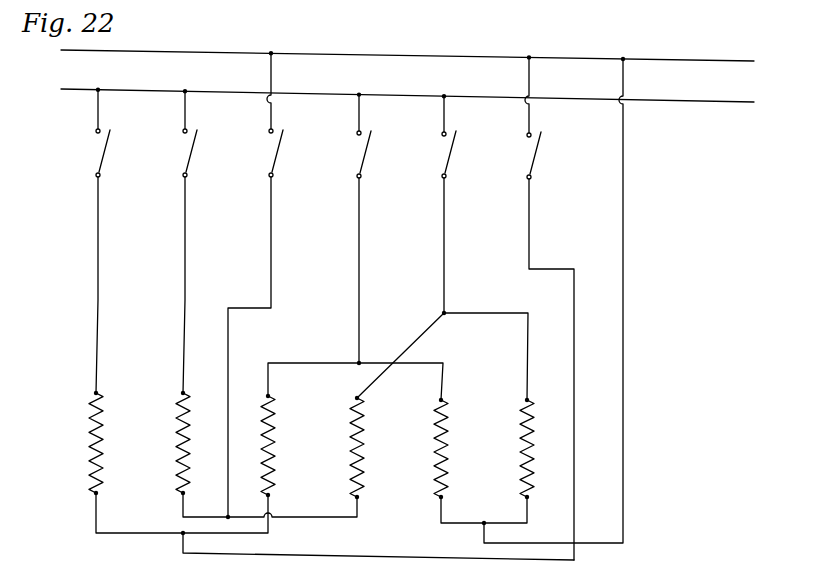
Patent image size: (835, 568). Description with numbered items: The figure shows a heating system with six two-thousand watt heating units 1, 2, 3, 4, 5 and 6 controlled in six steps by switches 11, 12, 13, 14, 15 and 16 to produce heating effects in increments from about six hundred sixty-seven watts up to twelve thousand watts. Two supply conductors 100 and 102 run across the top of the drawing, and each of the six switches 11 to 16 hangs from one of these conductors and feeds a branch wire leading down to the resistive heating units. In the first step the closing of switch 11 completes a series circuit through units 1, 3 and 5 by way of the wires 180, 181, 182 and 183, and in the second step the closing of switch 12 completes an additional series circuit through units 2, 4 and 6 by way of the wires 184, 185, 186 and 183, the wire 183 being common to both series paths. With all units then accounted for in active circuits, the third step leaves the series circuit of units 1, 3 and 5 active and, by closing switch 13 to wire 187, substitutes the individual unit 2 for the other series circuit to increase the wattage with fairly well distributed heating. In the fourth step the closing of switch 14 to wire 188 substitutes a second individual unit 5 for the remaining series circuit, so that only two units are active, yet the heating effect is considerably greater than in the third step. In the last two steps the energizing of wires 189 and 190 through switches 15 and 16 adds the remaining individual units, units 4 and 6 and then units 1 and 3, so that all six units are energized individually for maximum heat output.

The supply line 100 is at (352, 33).
The supply line 102 is at (407, 93).
The switch 11 is at (103, 152).
The switch 12 is at (189, 153).
The switch 13 is at (275, 154).
The switch 14 is at (363, 158).
The switch 15 is at (448, 158).
The switch 16 is at (533, 160).
The wire 180 is at (97, 198).
The wire 184 is at (184, 200).
The wire 187 is at (270, 203).
The wire 188 is at (358, 204).
The wire 189 is at (443, 206).
The wire 190 is at (528, 207).
The wire 183 is at (621, 208).
The wire 182 is at (309, 362).
The wire 186 is at (432, 324).
The wire 181 is at (152, 533).
The wire 185 is at (315, 510).
The heating unit 1 is at (89, 432).
The heating unit 2 is at (176, 437).
The heating unit 3 is at (262, 443).
The heating unit 4 is at (350, 442).
The heating unit 5 is at (435, 451).
The heating unit 6 is at (520, 455).